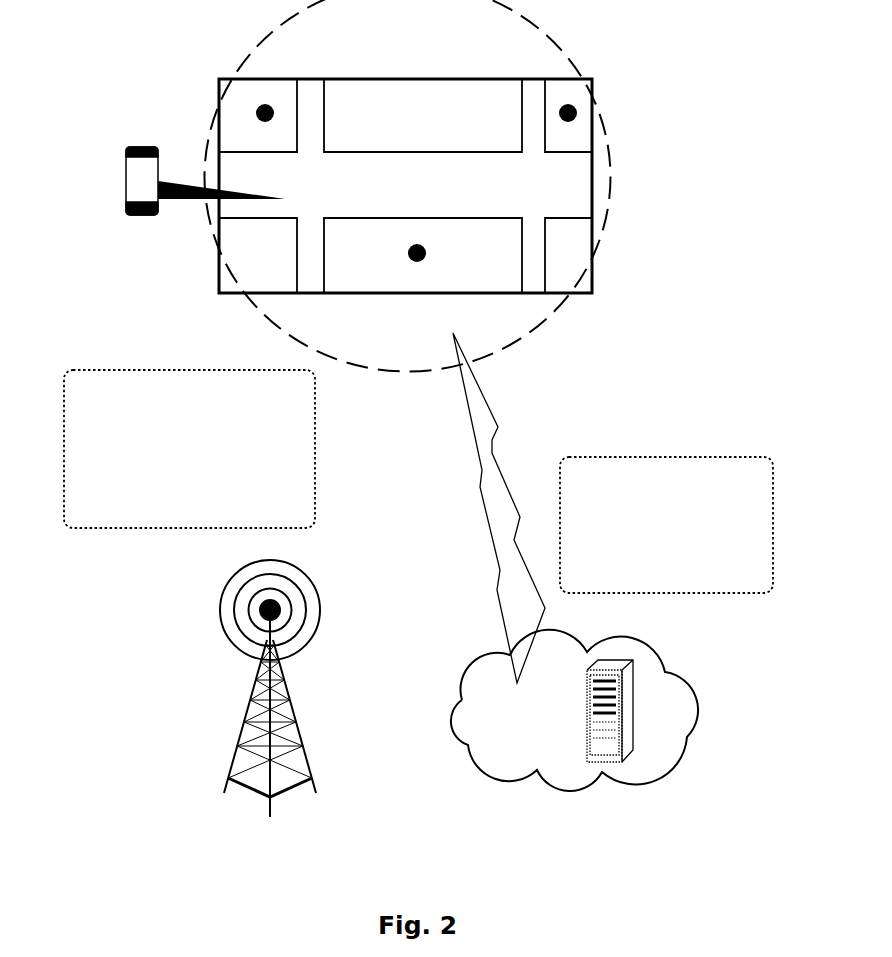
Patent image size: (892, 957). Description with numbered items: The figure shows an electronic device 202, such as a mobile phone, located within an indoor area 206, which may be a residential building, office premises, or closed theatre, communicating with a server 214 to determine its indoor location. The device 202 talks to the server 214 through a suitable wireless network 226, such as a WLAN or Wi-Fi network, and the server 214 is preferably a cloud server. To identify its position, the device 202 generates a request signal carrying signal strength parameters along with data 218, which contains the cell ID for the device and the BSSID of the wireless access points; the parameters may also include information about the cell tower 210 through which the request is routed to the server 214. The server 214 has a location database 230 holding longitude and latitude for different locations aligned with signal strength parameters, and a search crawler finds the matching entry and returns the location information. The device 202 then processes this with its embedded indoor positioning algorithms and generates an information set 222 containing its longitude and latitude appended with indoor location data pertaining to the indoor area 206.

The electronic device 202 is at (126, 147).
The indoor area 206 is at (592, 183).
The cell tower 210 is at (248, 717).
The server 214 is at (510, 773).
The data 218 is at (188, 370).
The information set 222 is at (667, 457).
The wireless network 226 is at (498, 420).
The location database 230 is at (628, 710).